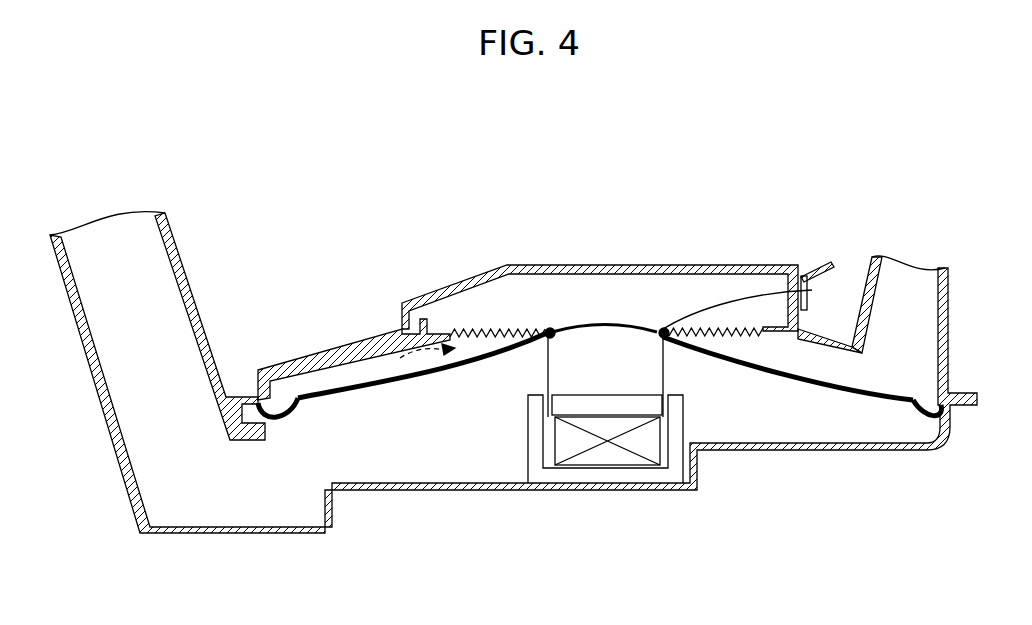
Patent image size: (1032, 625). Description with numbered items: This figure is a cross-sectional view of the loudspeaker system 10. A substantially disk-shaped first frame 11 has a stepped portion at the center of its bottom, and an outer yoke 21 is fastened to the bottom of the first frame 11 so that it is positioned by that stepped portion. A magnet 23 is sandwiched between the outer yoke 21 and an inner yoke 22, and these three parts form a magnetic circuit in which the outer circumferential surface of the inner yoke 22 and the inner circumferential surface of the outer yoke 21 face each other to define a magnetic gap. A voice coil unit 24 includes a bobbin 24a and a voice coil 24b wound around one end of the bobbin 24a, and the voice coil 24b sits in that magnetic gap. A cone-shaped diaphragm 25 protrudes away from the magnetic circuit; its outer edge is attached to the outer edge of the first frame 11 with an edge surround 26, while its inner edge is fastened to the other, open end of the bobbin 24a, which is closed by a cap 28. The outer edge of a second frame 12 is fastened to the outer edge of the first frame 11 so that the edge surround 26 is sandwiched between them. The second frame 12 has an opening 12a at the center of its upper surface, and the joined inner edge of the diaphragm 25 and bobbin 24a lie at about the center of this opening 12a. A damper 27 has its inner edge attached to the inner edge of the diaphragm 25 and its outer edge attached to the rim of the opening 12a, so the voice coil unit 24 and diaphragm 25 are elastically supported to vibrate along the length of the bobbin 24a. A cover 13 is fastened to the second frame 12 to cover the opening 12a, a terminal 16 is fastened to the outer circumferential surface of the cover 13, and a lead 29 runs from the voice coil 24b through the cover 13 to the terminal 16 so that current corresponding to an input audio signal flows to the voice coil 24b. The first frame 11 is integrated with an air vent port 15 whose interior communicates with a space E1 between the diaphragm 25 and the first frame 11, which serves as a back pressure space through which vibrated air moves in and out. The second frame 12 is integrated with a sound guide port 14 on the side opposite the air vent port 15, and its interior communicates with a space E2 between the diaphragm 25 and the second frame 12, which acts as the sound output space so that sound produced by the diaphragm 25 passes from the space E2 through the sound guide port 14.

The loudspeaker system 10 is at (897, 192).
The first frame 11 is at (473, 492).
The second frame 12 is at (352, 340).
The opening 12a is at (408, 362).
The cover 13 is at (644, 265).
The sound guide port 14 is at (950, 302).
The air vent port 15 is at (96, 390).
The terminal 16 is at (822, 262).
The outer yoke 21 is at (677, 457).
The inner yoke 22 is at (570, 410).
The magnet 23 is at (613, 462).
The voice coil unit 24 is at (690, 392).
The bobbin 24a is at (652, 357).
The voice coil 24b is at (548, 403).
The diaphragm 25 is at (407, 392).
The edge surround 26 is at (284, 421).
The damper 27 is at (498, 323).
The cap 28 is at (601, 326).
The lead 29 is at (738, 296).
The space E1 is at (370, 462).
The space E2 is at (808, 362).